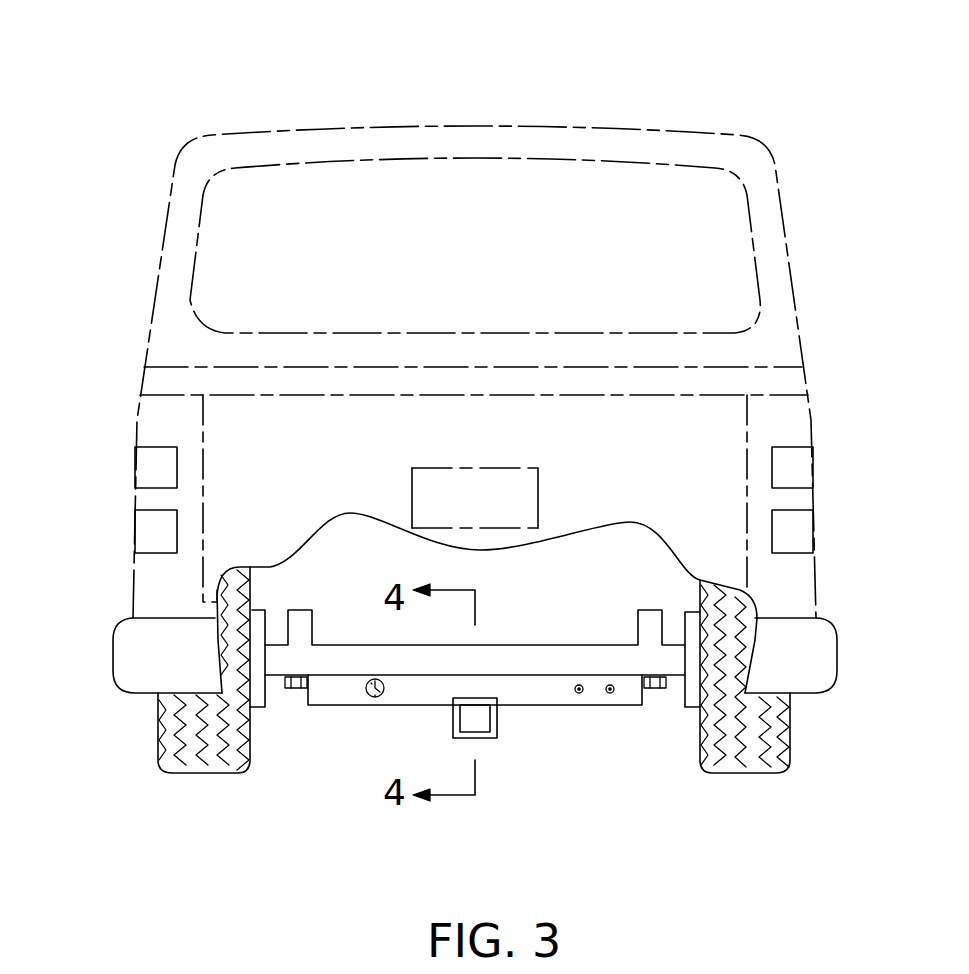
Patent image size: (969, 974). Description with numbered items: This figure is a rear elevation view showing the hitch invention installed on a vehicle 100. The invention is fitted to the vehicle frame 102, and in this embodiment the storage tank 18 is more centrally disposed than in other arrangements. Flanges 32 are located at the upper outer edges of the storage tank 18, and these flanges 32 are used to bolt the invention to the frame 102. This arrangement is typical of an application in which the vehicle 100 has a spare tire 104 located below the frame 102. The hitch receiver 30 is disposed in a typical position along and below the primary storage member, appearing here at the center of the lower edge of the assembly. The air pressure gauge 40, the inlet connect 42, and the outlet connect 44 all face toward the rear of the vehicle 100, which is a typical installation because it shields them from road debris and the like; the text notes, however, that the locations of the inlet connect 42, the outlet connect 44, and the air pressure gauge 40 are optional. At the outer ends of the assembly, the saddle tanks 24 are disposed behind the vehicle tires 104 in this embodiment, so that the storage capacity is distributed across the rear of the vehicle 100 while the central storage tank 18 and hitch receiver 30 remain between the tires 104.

The vehicle 100 is at (482, 76).
The saddle tanks 24 is at (113, 655).
The vehicle frame 102 is at (540, 643).
The spare tire 104 is at (760, 773).
The storage tank 18 is at (525, 705).
The flanges 32 is at (665, 690).
The air pressure gauge 40 is at (375, 700).
The inlet connect 42 is at (579, 695).
The outlet connect 44 is at (610, 695).
The hitch receiver 30 is at (483, 740).